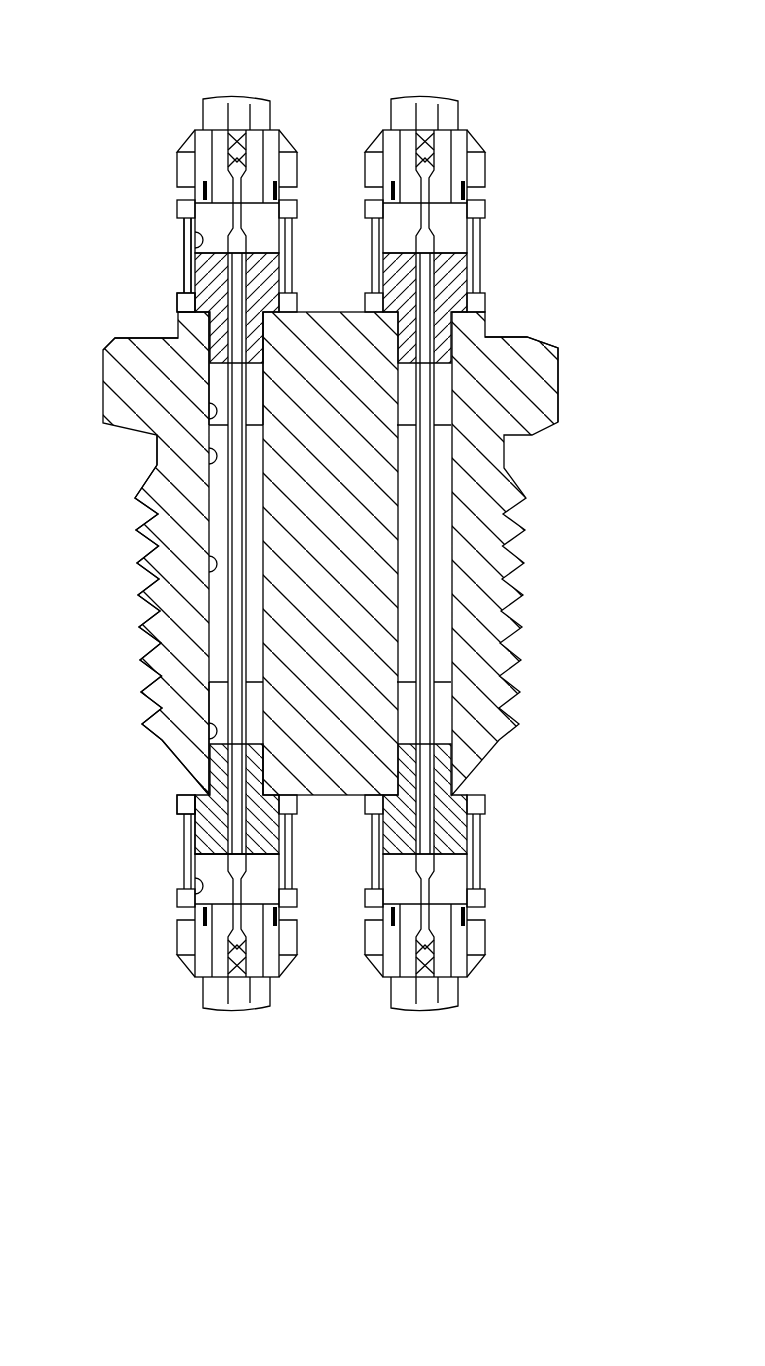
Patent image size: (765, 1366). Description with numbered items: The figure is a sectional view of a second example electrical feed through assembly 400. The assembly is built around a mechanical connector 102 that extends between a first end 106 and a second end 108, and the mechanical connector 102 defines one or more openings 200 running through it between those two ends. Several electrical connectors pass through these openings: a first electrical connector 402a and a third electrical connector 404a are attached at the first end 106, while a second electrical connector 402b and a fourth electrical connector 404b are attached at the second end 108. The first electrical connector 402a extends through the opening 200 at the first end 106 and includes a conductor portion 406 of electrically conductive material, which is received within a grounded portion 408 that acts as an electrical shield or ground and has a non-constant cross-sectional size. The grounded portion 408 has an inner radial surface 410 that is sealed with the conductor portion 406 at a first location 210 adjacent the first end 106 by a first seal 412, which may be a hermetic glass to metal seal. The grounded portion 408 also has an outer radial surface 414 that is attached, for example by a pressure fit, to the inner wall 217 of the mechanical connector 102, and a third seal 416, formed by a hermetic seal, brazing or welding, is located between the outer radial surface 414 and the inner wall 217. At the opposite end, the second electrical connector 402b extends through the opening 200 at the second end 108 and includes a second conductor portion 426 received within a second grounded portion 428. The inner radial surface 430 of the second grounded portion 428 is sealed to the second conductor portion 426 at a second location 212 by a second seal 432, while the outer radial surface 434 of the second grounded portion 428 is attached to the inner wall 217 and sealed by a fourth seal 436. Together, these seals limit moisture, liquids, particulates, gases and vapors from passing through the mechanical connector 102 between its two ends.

The second electrical feed through assembly 400 is at (97, 67).
The first electrical connector 402a is at (184, 142).
The third electrical connector 404a is at (477, 141).
The second electrical connector 402b is at (182, 960).
The fourth electrical connector 404b is at (478, 960).
The first location 210 is at (88, 250).
The second location 212 is at (100, 835).
The inner radial surface 410 is at (184, 248).
The grounded portion 408 is at (186, 283).
The first end 106 is at (127, 347).
The outer radial surface 414 is at (206, 326).
The third seal 416 is at (192, 350).
The first seal 412 is at (266, 273).
The mechanical connector 102 is at (541, 340).
The conductor portion 406 is at (204, 394).
The inner wall 217 is at (159, 457).
The opening 200 is at (208, 570).
The second conductor portion 426 is at (208, 693).
The inner radial surface 430 is at (208, 731).
The fourth seal 436 is at (192, 764).
The second end 108 is at (179, 768).
The outer radial surface 434 is at (200, 781).
The second grounded portion 428 is at (196, 798).
The second seal 432 is at (269, 839).